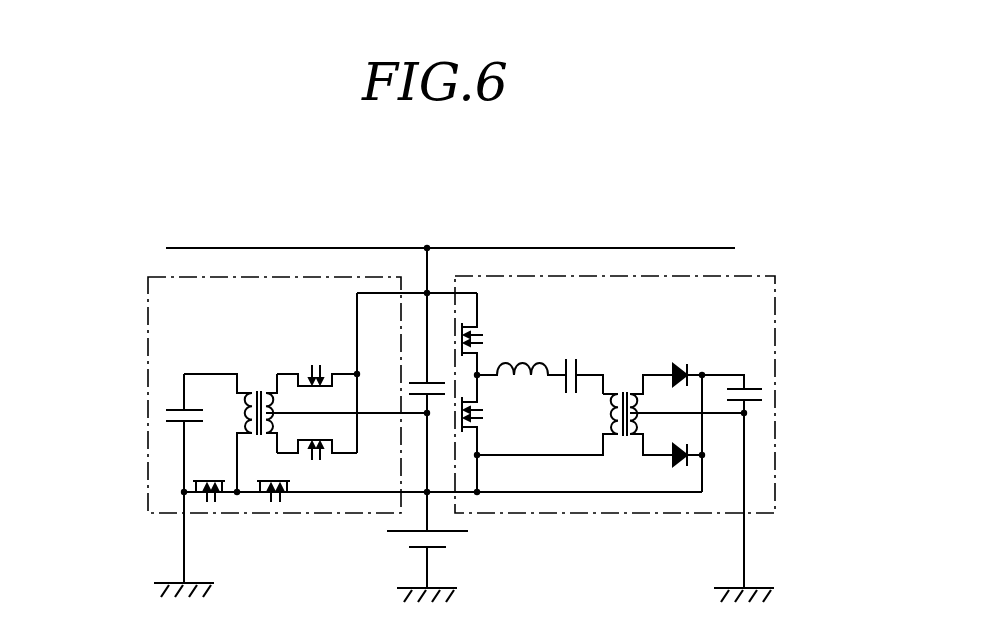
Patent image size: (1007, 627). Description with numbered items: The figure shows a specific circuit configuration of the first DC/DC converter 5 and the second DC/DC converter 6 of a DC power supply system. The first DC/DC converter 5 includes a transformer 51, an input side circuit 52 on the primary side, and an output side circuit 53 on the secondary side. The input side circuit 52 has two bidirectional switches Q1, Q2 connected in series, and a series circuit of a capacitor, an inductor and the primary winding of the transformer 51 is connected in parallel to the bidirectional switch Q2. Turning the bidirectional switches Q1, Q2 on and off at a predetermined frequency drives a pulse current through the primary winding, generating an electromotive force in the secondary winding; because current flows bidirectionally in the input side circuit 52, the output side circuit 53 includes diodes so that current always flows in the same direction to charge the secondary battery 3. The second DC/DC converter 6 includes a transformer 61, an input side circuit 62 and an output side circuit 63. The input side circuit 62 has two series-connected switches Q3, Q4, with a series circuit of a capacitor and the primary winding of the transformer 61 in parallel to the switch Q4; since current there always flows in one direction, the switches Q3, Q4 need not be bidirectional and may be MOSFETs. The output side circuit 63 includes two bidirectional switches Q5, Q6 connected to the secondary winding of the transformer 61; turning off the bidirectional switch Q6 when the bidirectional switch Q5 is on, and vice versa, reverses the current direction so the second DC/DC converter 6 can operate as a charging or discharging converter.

The secondary battery 3 is at (446, 547).
The first DC/DC converter 5 is at (682, 274).
The transformer 51 is at (621, 388).
The input side circuit 52 is at (493, 386).
The output side circuit 53 is at (670, 465).
The second DC/DC converter 6 is at (267, 282).
The transformer 61 is at (252, 383).
The input side circuit 62 is at (215, 450).
The output side circuit 63 is at (332, 402).
The bidirectional switch Q1 is at (487, 338).
The bidirectional switch Q2 is at (491, 420).
The switch Q3 is at (275, 505).
The switch Q4 is at (211, 506).
The bidirectional switch Q5 is at (315, 357).
The bidirectional switch Q6 is at (314, 462).